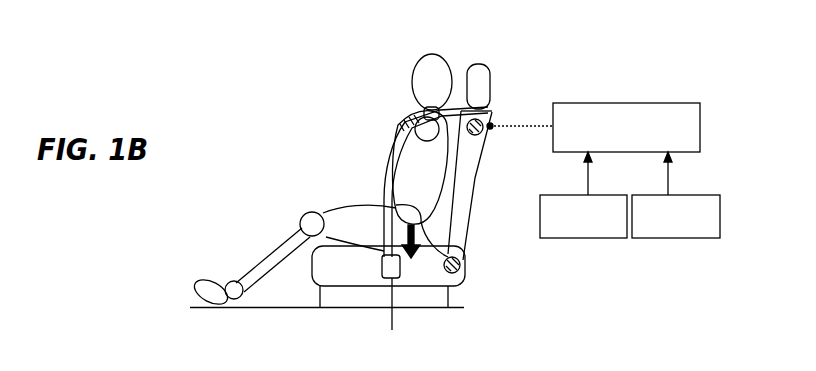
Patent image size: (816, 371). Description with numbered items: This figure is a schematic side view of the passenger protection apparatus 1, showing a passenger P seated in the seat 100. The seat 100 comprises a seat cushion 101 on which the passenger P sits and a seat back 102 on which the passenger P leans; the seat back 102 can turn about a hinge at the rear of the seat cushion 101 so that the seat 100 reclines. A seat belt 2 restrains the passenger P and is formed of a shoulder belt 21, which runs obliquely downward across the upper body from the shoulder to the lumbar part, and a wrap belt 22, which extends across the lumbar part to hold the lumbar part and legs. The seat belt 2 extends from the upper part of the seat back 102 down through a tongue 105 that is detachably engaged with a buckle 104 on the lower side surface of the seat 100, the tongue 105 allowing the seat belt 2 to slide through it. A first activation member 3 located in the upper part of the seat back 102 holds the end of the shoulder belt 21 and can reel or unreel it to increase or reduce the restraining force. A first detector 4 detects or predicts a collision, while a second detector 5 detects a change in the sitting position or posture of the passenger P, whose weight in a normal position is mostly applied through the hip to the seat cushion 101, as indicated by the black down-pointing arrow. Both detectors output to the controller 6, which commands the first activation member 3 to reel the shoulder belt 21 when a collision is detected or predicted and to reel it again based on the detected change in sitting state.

The passenger protection apparatus 1 is at (413, 184).
The seat belt 2 is at (387, 182).
The shoulder belt 21 is at (383, 166).
The wrap belt 22 is at (371, 209).
The first activation member 3 is at (490, 108).
The first detector 4 is at (610, 195).
The second detector 5 is at (683, 195).
The controller 6 is at (673, 103).
The seat 100 is at (404, 186).
The seat cushion 101 is at (321, 271).
The seat back 102 is at (474, 184).
The buckle 104 is at (394, 315).
The tongue 105 is at (378, 259).
The passenger P is at (433, 54).